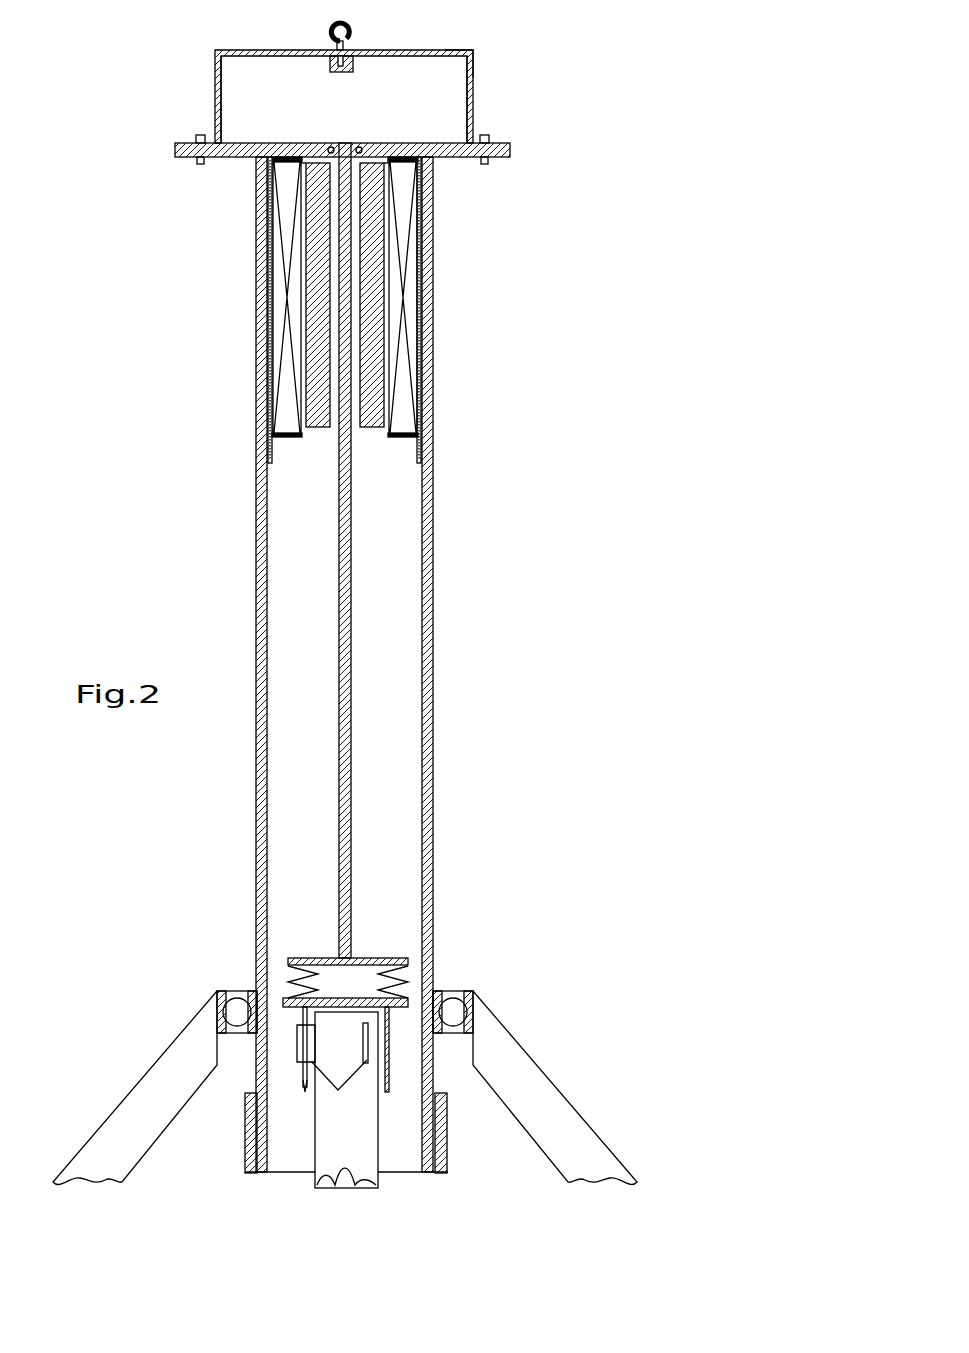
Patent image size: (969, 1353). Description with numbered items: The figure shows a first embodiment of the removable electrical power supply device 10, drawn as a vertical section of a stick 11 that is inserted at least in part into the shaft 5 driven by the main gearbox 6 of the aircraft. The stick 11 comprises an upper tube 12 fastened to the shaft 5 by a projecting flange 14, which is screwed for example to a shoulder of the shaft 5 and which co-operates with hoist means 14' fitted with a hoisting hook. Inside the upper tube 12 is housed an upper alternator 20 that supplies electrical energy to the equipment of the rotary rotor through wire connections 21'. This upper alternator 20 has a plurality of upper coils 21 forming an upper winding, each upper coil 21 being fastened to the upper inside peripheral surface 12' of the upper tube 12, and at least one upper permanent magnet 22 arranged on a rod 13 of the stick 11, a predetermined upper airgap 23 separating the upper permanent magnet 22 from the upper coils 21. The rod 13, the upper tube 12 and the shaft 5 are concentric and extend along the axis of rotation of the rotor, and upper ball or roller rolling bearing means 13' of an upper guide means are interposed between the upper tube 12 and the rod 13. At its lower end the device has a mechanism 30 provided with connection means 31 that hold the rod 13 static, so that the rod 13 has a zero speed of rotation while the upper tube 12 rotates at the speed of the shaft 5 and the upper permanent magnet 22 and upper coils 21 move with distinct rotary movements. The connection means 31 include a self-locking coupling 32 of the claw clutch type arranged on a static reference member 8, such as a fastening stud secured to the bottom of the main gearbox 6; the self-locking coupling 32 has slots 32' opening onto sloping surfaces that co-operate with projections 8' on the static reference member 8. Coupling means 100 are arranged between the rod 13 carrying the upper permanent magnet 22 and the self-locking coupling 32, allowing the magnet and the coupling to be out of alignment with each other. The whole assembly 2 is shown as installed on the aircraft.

The sampling device 2 is at (610, 113).
The electrical power supply device 10 is at (536, 77).
The projecting flange 14 is at (315, 96).
The hoist means 14' is at (486, 46).
The stick 11 is at (375, 130).
The upper ball or roller rolling bearing means 13' is at (345, 119).
The shaft 5 is at (432, 278).
The upper tube 12 is at (228, 310).
The upper inside peripheral surface 12' is at (452, 325).
The upper coils 21 is at (343, 299).
The wire connections 21' is at (357, 116).
The upper alternator 20 is at (297, 445).
The upper permanent magnet 22 is at (316, 428).
The upper airgap 23 is at (380, 438).
The rod 13 is at (366, 550).
The mechanism 30 is at (538, 945).
The connection means 31 is at (413, 986).
The coupling means 100 is at (285, 978).
The slots 32' is at (345, 972).
The self-locking coupling 32 is at (390, 1084).
The static reference member 8 is at (327, 1114).
The projections 8' is at (362, 1148).
The main gearbox 6 is at (506, 1184).